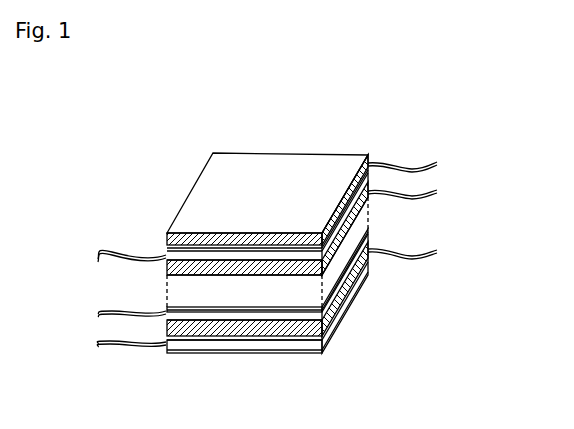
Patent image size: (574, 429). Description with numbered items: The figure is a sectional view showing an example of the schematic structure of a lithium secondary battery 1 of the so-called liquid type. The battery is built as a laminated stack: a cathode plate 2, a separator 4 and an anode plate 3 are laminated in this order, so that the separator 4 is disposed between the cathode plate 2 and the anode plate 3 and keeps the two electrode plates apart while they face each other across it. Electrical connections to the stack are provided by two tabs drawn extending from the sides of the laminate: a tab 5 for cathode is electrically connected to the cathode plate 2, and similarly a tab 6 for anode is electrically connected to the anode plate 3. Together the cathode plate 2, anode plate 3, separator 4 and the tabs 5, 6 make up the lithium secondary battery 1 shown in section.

The lithium secondary battery 1 is at (229, 148).
The cathode plate 2 is at (165, 243).
The anode plate 3 is at (229, 342).
The separator 4 is at (323, 338).
The tab for cathode 5 is at (435, 193).
The tab for anode 6 is at (108, 252).